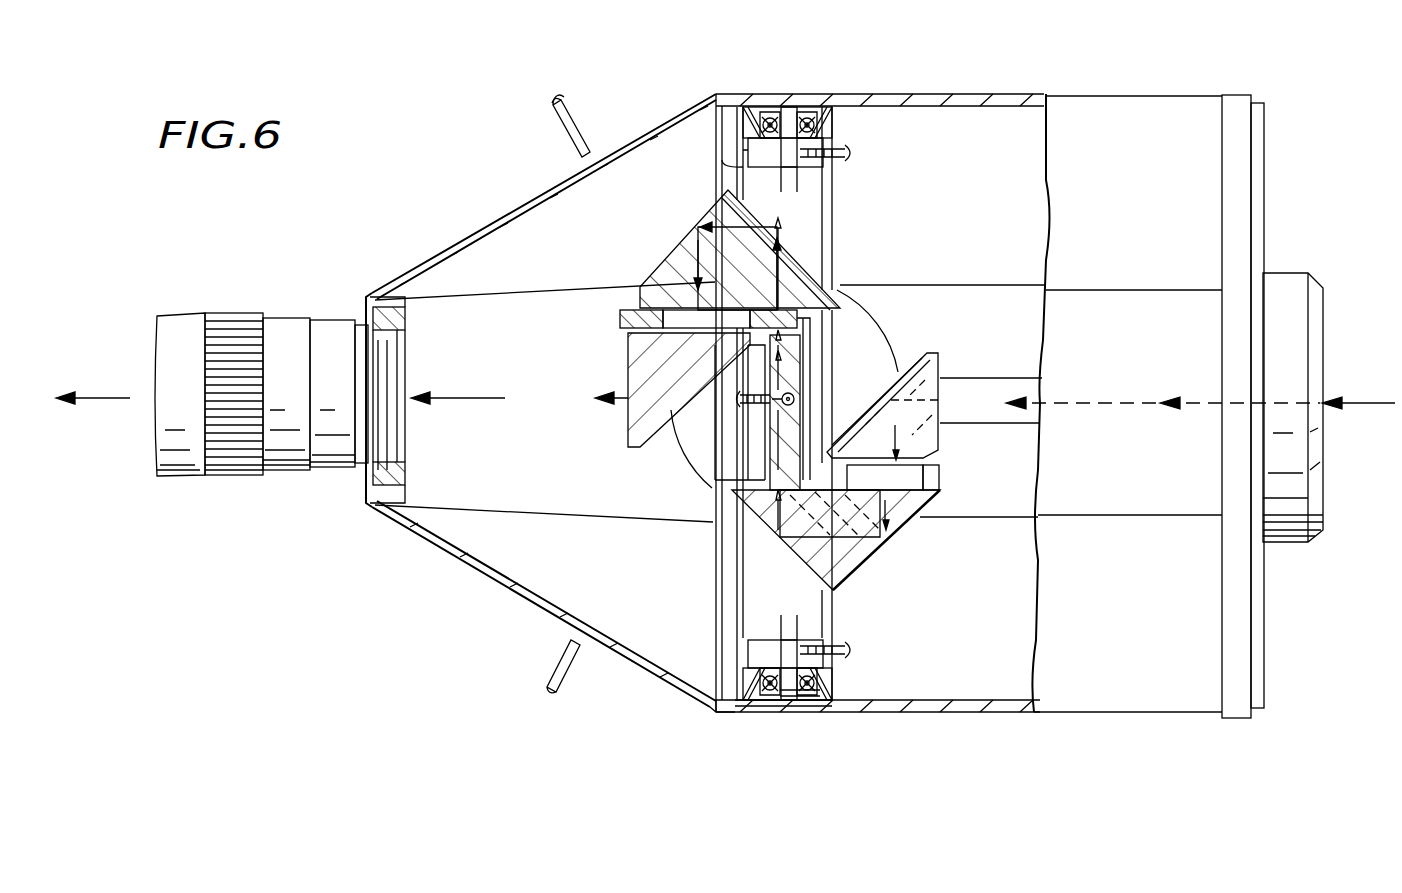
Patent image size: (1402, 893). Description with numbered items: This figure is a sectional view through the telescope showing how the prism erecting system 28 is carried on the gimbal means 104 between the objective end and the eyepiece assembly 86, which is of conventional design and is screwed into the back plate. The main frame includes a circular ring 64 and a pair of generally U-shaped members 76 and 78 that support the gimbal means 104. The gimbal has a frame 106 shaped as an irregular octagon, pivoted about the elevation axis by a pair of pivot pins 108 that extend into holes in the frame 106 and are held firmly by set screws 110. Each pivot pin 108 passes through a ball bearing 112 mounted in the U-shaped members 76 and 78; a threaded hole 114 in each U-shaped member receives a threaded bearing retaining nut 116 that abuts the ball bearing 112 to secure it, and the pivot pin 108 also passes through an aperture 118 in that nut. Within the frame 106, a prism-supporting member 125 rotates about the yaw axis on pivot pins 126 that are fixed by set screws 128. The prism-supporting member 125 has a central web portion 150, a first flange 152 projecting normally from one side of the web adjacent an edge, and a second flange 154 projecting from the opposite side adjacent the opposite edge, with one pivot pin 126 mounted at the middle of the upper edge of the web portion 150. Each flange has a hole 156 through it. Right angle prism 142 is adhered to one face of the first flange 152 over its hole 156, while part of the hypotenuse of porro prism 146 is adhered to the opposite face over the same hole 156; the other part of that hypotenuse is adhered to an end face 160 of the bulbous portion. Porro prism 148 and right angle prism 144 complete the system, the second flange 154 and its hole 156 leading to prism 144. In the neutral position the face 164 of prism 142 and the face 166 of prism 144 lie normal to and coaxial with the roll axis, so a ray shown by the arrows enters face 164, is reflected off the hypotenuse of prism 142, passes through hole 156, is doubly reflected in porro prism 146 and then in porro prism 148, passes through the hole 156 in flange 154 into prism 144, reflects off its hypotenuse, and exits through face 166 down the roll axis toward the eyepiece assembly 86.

The prism erecting system 28 is at (866, 560).
The circular ring 64 is at (834, 320).
The U-shaped member 76 is at (825, 125).
The U-shaped member 78 is at (815, 683).
The eyepiece assembly 86 is at (240, 300).
The gimbal means 104 is at (737, 650).
The frame 106 is at (743, 153).
The pivot pin 108 is at (789, 168).
The set screw 110 is at (850, 153).
The ball bearing 112 is at (773, 108).
The threaded hole 114 is at (742, 693).
The bearing retaining nut 116 is at (773, 698).
The aperture 118 is at (803, 108).
The prism-supporting member 125 is at (665, 318).
The pivot pin 126 is at (795, 401).
The set screw 128 is at (697, 390).
The right angle prism 142 is at (927, 430).
The right angle prism 144 is at (632, 349).
The porro prism 146 is at (913, 505).
The porro prism 148 is at (697, 240).
The central web portion 150 is at (808, 340).
The first flange 152 is at (943, 480).
The second flange 154 is at (620, 318).
The hole 156 is at (676, 308).
The end face 160 is at (833, 262).
The face 164 is at (937, 385).
The face 166 is at (725, 402).